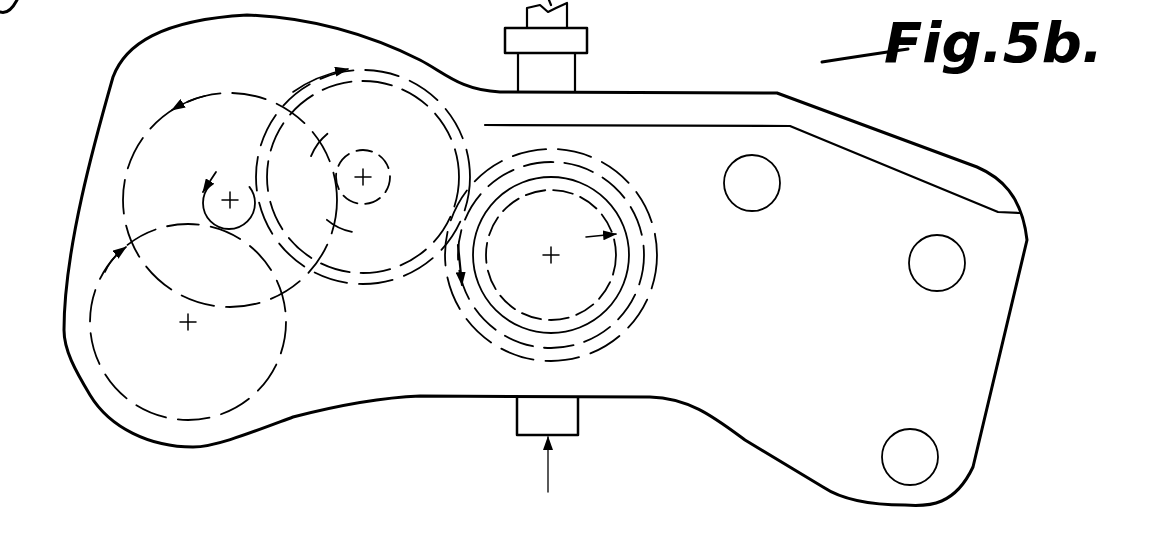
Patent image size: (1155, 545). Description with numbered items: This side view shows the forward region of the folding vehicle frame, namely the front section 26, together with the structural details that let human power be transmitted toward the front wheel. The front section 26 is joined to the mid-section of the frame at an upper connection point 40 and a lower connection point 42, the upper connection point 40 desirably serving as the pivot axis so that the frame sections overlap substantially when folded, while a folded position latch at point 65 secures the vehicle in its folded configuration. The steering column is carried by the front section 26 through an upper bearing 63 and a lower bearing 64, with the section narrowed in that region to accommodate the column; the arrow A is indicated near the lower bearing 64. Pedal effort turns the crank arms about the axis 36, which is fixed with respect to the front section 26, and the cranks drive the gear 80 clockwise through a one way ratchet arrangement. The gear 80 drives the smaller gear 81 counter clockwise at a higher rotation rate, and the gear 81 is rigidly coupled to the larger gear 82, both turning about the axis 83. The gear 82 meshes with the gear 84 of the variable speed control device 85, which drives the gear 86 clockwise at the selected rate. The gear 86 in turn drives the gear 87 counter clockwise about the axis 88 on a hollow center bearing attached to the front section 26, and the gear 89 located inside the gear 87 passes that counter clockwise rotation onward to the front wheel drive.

The front section 26 is at (928, 122).
The upper bearing 63 is at (575, 83).
The lower bearing 64 is at (523, 420).
The folded position latch point 65 is at (769, 192).
The upper connection point 40 is at (954, 265).
The lower connection point 42 is at (928, 470).
The gear 82 is at (129, 157).
The gear 81 is at (204, 210).
The axis 83 is at (233, 195).
The gear 84 is at (377, 150).
The variable speed control device 85 is at (392, 70).
The gear 86 is at (440, 88).
The gear 87 is at (641, 206).
The axis 88 is at (557, 260).
The gear 89 is at (586, 222).
The gear 80 is at (273, 373).
The axis 36 is at (200, 326).
The direction arrow A is at (550, 472).